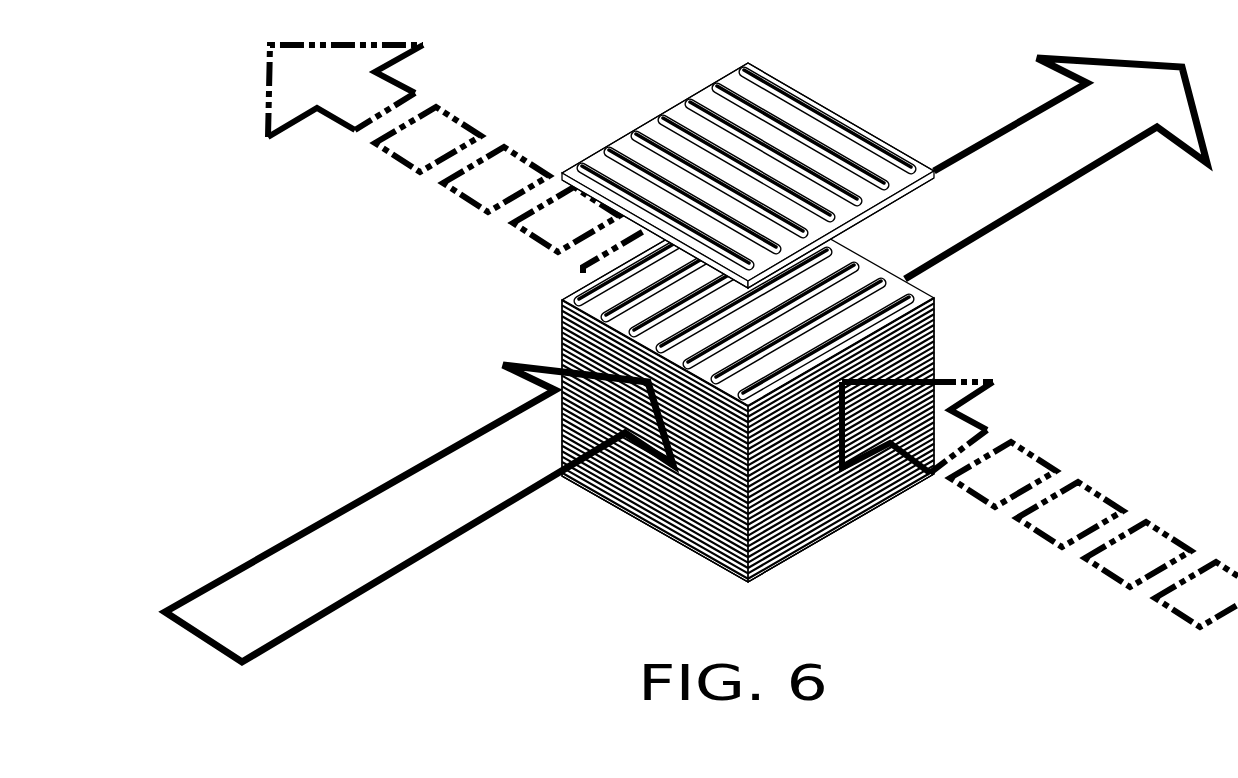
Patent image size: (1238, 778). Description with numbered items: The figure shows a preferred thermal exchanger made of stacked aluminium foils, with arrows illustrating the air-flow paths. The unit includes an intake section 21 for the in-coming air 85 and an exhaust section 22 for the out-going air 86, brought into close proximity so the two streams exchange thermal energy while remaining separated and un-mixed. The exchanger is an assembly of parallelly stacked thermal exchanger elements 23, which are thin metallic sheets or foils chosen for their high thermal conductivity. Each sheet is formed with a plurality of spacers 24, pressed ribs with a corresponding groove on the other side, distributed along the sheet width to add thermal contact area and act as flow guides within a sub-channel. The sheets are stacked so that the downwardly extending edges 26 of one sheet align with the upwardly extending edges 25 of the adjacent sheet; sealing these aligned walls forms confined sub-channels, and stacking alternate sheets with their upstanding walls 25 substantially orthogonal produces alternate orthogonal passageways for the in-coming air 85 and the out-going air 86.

The intake section 21 is at (895, 507).
The exhaust section 22 is at (603, 513).
The thermal exchanger element 23 is at (738, 87).
The spacer 24 is at (658, 122).
The upwardly extending edge 25 is at (818, 102).
The downwardly extending edge 26 is at (866, 215).
The in-coming air stream 85 is at (525, 177).
The out-going air stream 86 is at (330, 547).